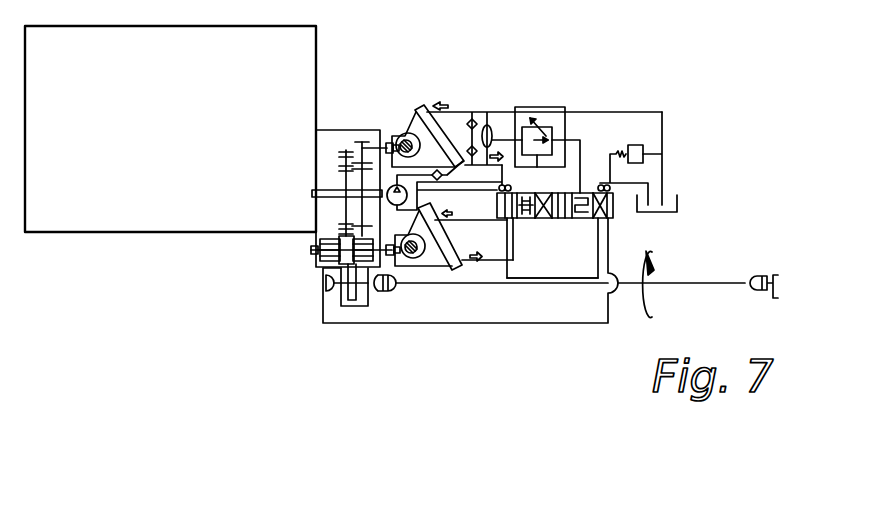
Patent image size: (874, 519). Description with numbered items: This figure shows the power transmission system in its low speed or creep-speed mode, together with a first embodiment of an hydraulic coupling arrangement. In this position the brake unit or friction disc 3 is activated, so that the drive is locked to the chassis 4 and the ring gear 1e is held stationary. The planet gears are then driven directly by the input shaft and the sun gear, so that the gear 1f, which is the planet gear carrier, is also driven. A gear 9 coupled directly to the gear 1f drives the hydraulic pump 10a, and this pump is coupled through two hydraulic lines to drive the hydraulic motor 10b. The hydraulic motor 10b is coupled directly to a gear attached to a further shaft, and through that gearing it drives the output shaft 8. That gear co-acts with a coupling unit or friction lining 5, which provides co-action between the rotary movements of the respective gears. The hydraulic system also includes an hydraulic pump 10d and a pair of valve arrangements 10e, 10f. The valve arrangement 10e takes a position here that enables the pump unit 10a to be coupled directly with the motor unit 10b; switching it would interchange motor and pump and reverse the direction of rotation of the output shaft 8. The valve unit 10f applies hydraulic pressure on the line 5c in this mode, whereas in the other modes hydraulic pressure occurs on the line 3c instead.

The chassis 4 is at (290, 307).
The line 3c is at (597, 325).
The ring gear 1e is at (345, 157).
The gear 9 is at (365, 140).
The gear 1f is at (357, 172).
The brake unit 3 is at (313, 251).
The coupling unit 5 is at (358, 307).
The output shaft 8 is at (434, 286).
The hydraulic pump 10a is at (414, 109).
The valve arrangement 10e is at (525, 220).
The valve unit 10f is at (613, 205).
The line 5c is at (567, 280).
The hydraulic pump 10d is at (389, 201).
The hydraulic motor 10b is at (456, 232).